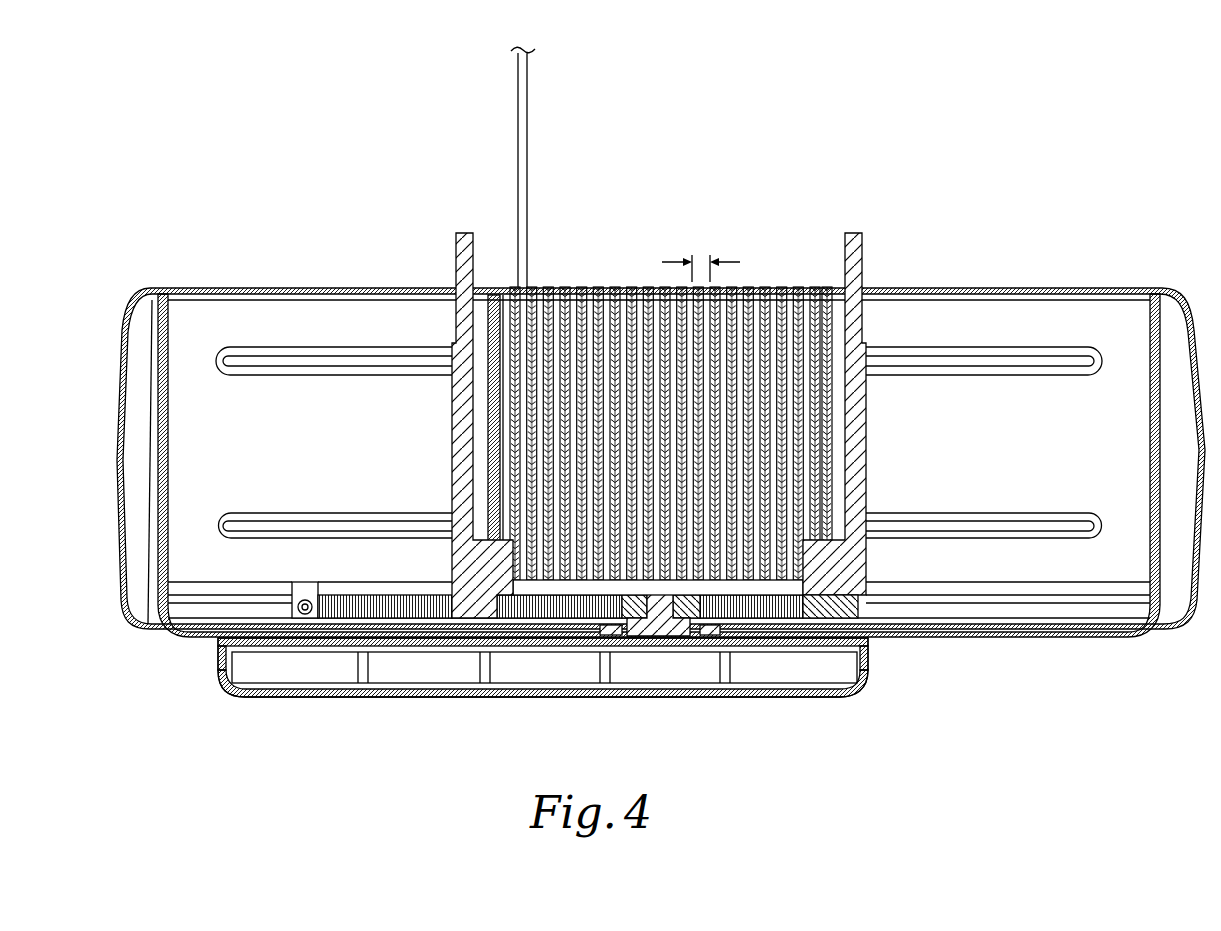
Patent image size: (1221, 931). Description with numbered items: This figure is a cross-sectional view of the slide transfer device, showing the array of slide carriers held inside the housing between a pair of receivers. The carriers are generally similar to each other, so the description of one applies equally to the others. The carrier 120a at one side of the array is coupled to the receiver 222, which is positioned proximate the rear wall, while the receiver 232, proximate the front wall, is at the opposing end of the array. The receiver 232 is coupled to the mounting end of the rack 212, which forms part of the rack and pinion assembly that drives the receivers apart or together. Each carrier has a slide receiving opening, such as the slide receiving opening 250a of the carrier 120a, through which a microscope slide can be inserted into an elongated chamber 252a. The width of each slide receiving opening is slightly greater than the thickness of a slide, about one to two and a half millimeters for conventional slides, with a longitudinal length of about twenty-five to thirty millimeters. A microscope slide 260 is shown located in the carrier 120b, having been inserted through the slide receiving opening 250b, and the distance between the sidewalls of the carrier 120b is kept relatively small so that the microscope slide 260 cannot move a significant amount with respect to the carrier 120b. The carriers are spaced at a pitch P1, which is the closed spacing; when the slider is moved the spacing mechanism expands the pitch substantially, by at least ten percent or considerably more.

The carrier 120a is at (512, 287).
The carrier 120b is at (530, 287).
The rack 212 is at (860, 607).
The receiver 222 is at (456, 240).
The receiver 232 is at (862, 258).
The slide receiving opening 250a is at (495, 290).
The slide receiving opening 250b is at (528, 287).
The elongated chamber 252a is at (500, 398).
The microscope slide 260 is at (527, 123).
The pitch P1 is at (713, 266).